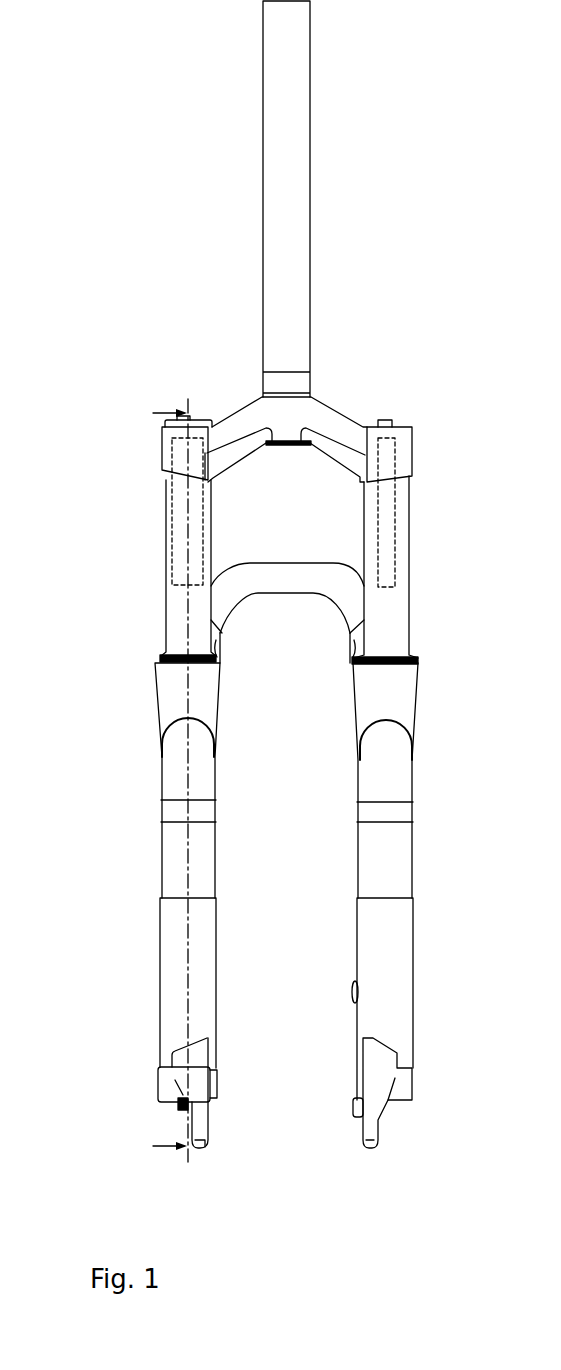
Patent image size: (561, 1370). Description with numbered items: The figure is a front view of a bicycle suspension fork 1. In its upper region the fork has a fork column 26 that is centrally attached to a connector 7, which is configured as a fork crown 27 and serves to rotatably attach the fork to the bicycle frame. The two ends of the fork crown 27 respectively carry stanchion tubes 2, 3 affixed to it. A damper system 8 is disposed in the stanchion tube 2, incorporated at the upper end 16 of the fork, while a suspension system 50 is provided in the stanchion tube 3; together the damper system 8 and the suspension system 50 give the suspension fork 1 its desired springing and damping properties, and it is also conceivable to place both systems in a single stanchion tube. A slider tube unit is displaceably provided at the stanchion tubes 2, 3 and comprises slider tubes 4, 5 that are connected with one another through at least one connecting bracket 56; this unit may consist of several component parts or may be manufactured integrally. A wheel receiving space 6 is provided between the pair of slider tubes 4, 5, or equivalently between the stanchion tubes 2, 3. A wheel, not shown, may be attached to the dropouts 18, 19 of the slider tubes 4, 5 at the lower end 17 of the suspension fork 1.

The suspension fork 1 is at (158, 170).
The fork column 26 is at (298, 42).
The connector 7 is at (304, 403).
The fork crown 27 is at (342, 422).
The upper end 16 is at (142, 448).
The damper system 8 is at (178, 492).
The suspension system 50 is at (387, 458).
The stanchion tube 2 is at (140, 582).
The stanchion tube 3 is at (421, 536).
The connecting bracket 56 is at (272, 617).
The slider tube 4 is at (141, 901).
The slider tube 5 is at (430, 901).
The lower end 17 is at (132, 1052).
The dropout 18 is at (137, 1122).
The dropout 19 is at (404, 1130).
The wheel receiving space 6 is at (285, 1083).